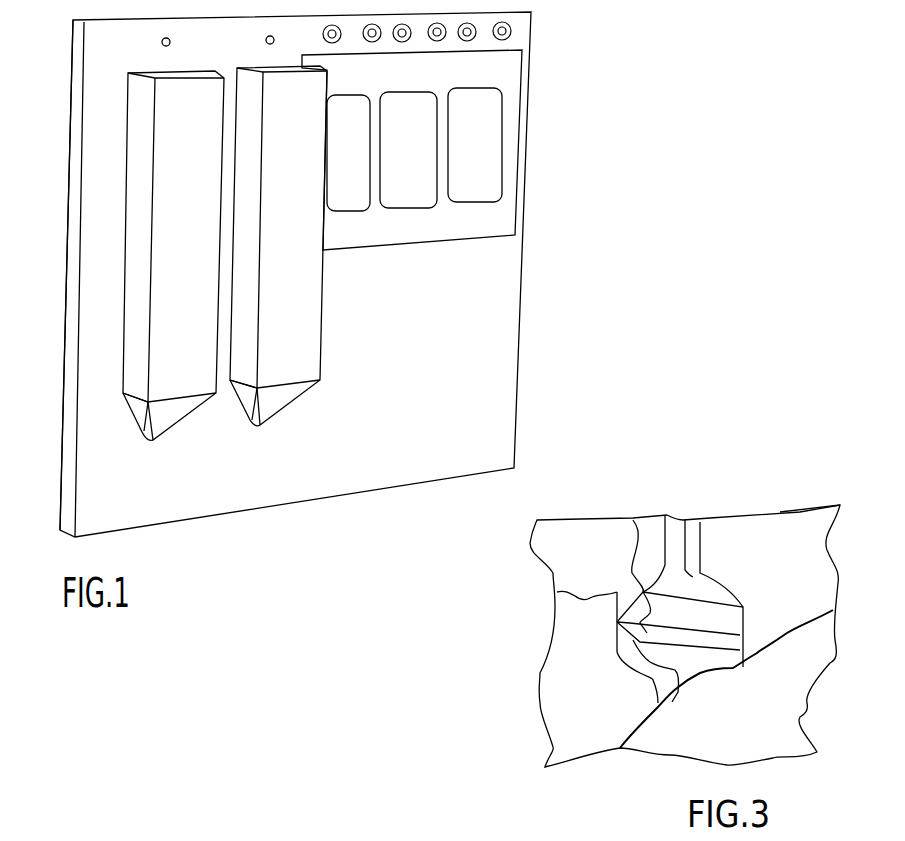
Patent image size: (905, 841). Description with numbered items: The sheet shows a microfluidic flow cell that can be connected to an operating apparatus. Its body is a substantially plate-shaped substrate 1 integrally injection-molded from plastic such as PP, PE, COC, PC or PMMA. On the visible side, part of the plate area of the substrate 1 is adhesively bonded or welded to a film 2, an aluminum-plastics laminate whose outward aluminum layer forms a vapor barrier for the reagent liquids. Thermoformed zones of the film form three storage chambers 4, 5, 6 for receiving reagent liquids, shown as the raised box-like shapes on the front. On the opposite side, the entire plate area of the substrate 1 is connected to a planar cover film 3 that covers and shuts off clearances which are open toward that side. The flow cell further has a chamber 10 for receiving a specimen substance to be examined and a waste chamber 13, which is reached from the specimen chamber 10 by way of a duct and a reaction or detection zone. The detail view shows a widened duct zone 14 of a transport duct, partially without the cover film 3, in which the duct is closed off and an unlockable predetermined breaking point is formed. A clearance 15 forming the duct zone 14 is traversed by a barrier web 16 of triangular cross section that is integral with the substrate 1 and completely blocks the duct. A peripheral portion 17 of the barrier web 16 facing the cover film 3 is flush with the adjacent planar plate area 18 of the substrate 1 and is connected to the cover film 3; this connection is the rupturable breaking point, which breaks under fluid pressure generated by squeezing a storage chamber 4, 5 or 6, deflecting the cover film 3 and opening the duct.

In FIG. 1, the substrate 1 is at (502, 342).
In FIG. 3, the substrate 1 is at (575, 522).
In FIG. 1, the film 2 is at (500, 237).
In FIG. 1, the cover film 3 is at (66, 341).
In FIG. 3, the cover film 3 is at (787, 628).
In FIG. 1, the storage chamber 4 is at (353, 196).
In FIG. 1, the storage chamber 5 is at (408, 194).
In FIG. 1, the storage chamber 6 is at (469, 190).
In FIG. 1, the specimen chamber 10 is at (302, 347).
In FIG. 1, the waste chamber 13 is at (173, 153).
In FIG. 3, the duct zone 14 is at (557, 592).
In FIG. 3, the clearance 15 is at (693, 577).
In FIG. 3, the barrier web 16 is at (648, 633).
In FIG. 3, the peripheral portion 17 is at (633, 520).
In FIG. 3, the planar plate area 18 is at (782, 550).